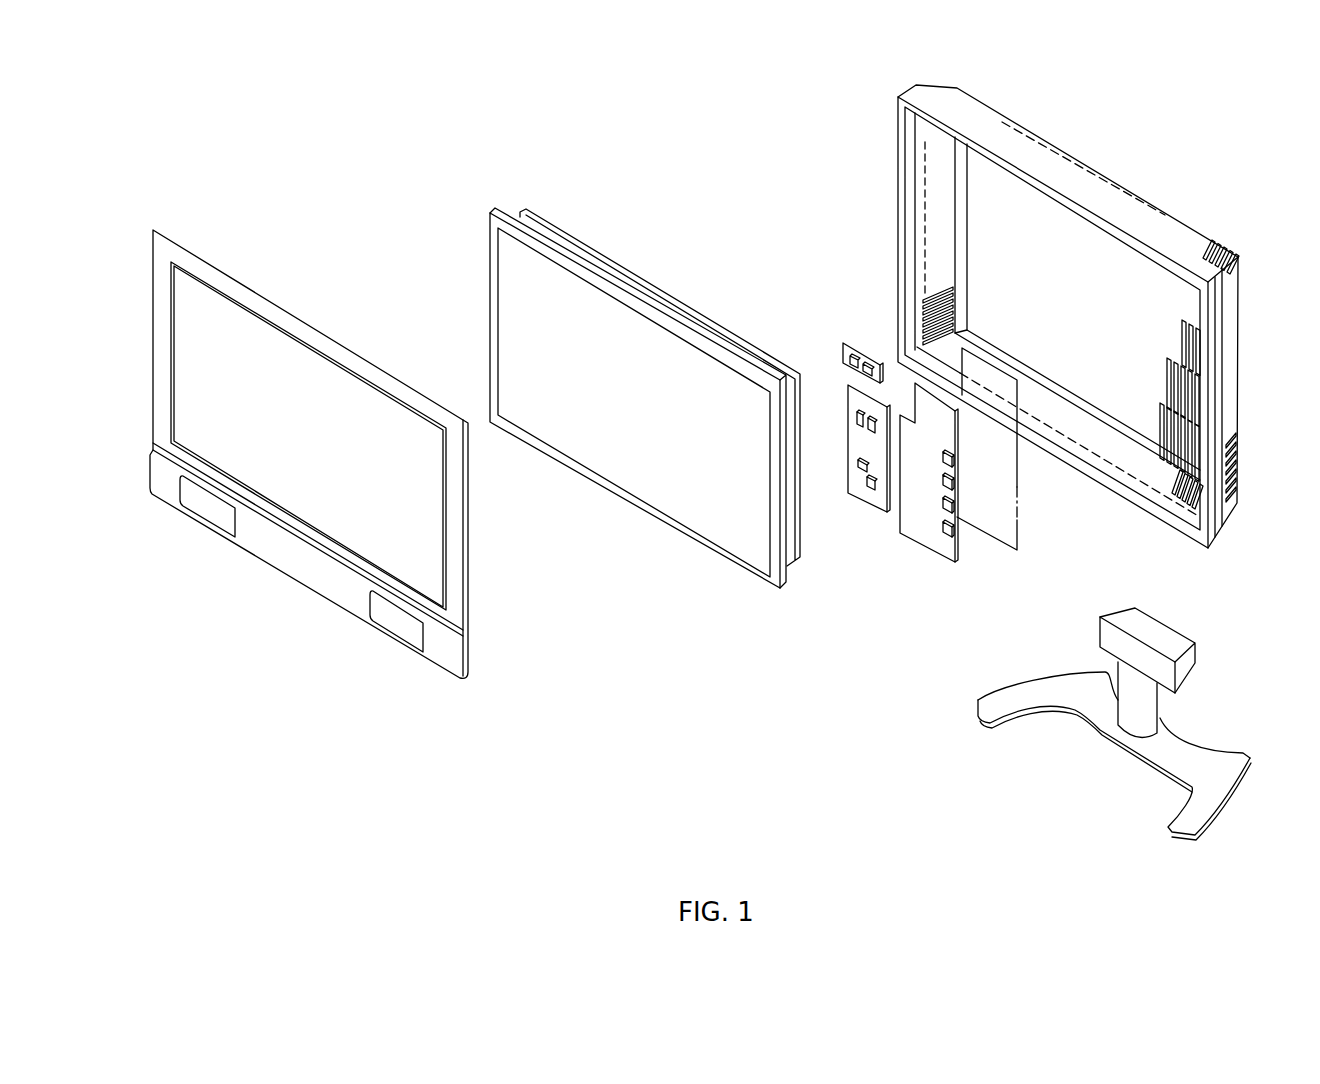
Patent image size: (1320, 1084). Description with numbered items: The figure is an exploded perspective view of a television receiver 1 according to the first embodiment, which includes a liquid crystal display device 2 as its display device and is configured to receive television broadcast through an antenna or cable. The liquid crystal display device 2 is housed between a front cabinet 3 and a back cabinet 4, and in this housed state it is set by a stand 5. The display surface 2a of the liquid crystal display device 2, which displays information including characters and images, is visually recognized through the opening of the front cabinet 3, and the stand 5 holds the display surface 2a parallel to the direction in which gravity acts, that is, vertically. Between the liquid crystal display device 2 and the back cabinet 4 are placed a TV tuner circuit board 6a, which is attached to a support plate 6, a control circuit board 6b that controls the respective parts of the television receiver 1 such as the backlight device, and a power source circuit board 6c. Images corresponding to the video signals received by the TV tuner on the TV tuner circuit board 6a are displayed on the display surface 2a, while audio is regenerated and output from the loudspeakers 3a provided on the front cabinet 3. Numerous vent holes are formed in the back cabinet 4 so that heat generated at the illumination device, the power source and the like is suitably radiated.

The television receiver 1 is at (536, 111).
The liquid crystal display device 2 is at (645, 407).
The display surface 2a is at (628, 452).
The front cabinet 3 is at (340, 464).
The loudspeakers 3a is at (207, 512).
The back cabinet 4 is at (1095, 180).
The stand 5 is at (1193, 752).
The support plate 6 is at (1020, 523).
The TV tuner circuit board 6a is at (840, 355).
The control circuit board 6b is at (860, 494).
The power source circuit board 6c is at (922, 532).